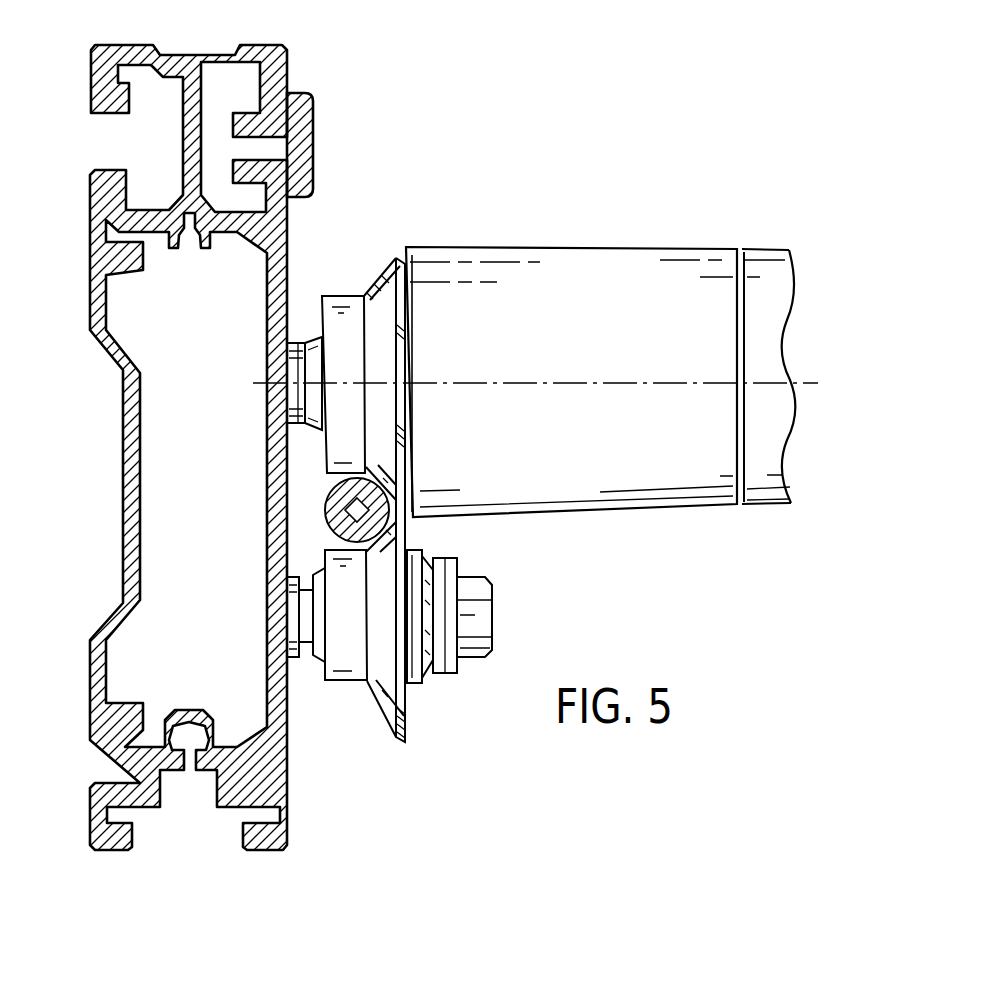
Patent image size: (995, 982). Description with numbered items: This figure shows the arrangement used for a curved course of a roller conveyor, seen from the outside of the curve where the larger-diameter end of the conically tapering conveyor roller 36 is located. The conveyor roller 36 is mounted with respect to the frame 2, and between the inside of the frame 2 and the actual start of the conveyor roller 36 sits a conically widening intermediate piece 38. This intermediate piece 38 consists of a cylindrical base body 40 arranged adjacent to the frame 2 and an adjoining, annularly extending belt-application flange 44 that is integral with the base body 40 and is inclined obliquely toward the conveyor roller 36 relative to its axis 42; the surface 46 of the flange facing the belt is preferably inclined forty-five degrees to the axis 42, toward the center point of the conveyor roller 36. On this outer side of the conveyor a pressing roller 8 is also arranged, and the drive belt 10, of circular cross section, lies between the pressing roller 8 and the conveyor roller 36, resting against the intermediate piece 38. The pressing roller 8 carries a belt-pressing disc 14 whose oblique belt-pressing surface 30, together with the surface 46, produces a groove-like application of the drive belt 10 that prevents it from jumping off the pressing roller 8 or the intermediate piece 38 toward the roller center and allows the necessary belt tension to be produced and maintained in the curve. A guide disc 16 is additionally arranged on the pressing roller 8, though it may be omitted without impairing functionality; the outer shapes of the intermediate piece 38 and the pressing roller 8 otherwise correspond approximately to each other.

The frame 2 is at (103, 477).
The pressing roller 8 is at (420, 707).
The drive belt 10 is at (324, 522).
The belt-pressing disc 14 is at (390, 543).
The guide disc 16 is at (396, 735).
The belt-pressing surface 30 is at (371, 699).
The conveyor roller 36 is at (627, 262).
The intermediate piece 38 is at (358, 286).
The cylindrical base body 40 is at (326, 447).
The axis 42 is at (760, 373).
The belt-application flange 44 is at (384, 354).
The surface 46 is at (381, 260).